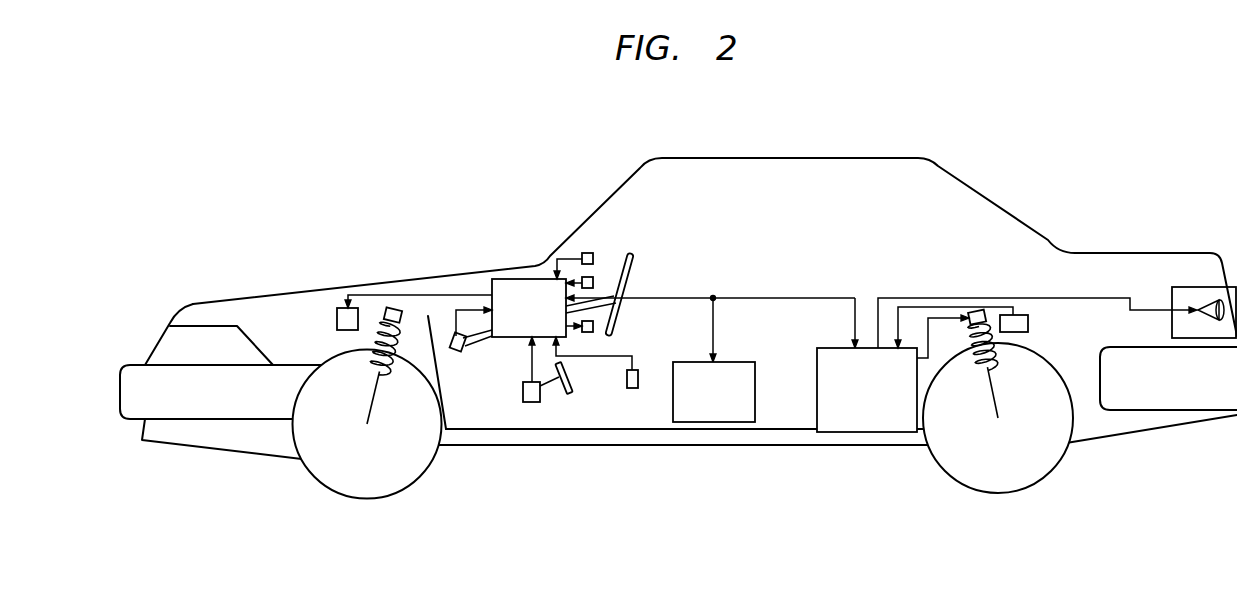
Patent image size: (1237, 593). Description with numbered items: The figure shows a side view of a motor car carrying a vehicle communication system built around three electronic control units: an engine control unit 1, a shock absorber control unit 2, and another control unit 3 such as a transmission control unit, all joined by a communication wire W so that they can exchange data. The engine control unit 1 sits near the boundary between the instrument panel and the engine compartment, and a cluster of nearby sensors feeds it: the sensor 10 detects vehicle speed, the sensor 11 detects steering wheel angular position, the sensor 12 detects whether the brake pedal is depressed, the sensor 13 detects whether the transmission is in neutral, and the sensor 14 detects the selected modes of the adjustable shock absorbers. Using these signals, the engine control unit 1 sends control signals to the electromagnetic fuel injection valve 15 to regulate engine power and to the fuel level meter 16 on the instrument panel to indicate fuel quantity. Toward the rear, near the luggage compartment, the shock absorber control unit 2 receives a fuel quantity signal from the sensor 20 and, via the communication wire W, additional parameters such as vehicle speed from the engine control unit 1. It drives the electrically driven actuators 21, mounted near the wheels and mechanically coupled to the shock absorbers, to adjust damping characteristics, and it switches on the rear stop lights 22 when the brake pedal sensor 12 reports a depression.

The engine electronic control unit 1 is at (506, 338).
The shock absorber electronic control unit 2 is at (822, 348).
The another electronic control unit 3 is at (730, 362).
The sensor 10 is at (594, 282).
The sensor 11 is at (462, 352).
The sensor 12 is at (540, 394).
The sensor 13 is at (638, 371).
The sensor 14 is at (590, 253).
The electromagnetic fuel injection valve 15 is at (336, 318).
The fuel level meter 16 is at (588, 332).
The sensor 20 is at (1028, 325).
The electrically driven actuators 21 is at (400, 323).
The stop lights 22 is at (1198, 311).
The communication wire W is at (736, 297).